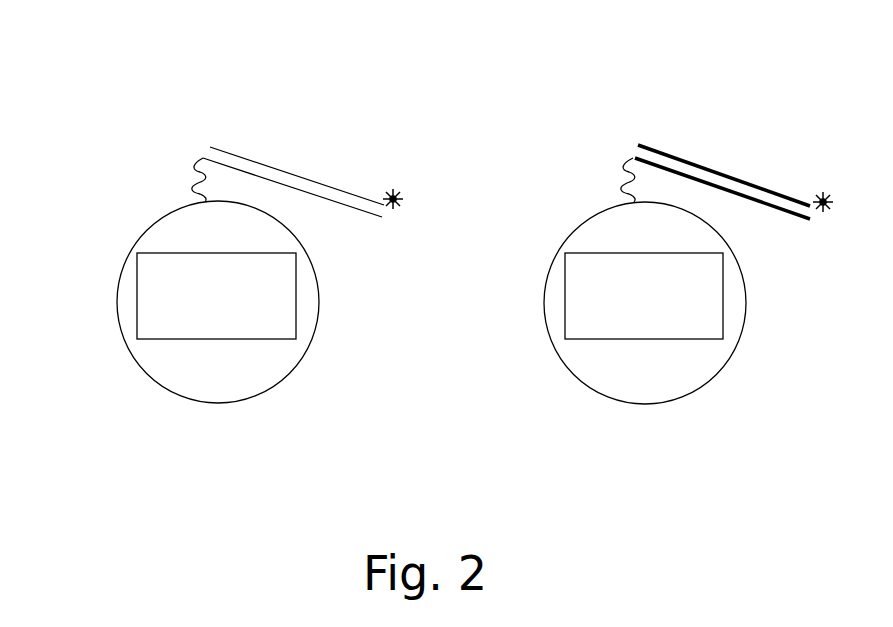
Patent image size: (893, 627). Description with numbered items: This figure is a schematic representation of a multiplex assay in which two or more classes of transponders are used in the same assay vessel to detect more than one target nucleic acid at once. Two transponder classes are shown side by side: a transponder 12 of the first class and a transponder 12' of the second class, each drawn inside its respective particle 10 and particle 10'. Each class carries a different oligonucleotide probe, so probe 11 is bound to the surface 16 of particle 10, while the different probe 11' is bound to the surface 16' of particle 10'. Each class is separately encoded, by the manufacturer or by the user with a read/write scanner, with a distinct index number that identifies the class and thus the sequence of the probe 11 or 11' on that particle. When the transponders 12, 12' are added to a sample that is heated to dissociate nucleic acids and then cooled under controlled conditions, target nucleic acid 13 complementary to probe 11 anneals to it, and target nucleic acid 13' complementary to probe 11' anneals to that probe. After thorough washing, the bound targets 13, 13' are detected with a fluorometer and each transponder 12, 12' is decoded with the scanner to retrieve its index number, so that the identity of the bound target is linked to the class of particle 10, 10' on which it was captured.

The particle 10 is at (197, 278).
The oligonucleotide probe 11 is at (287, 223).
The transponder 12 is at (164, 296).
The target nucleic acid 13 is at (297, 168).
The surface 16 is at (128, 306).
The particle 10' is at (630, 276).
The oligonucleotide probe 11' is at (717, 224).
The transponder 12' is at (581, 296).
The target nucleic acid 13' is at (727, 168).
The surface 16' is at (558, 313).